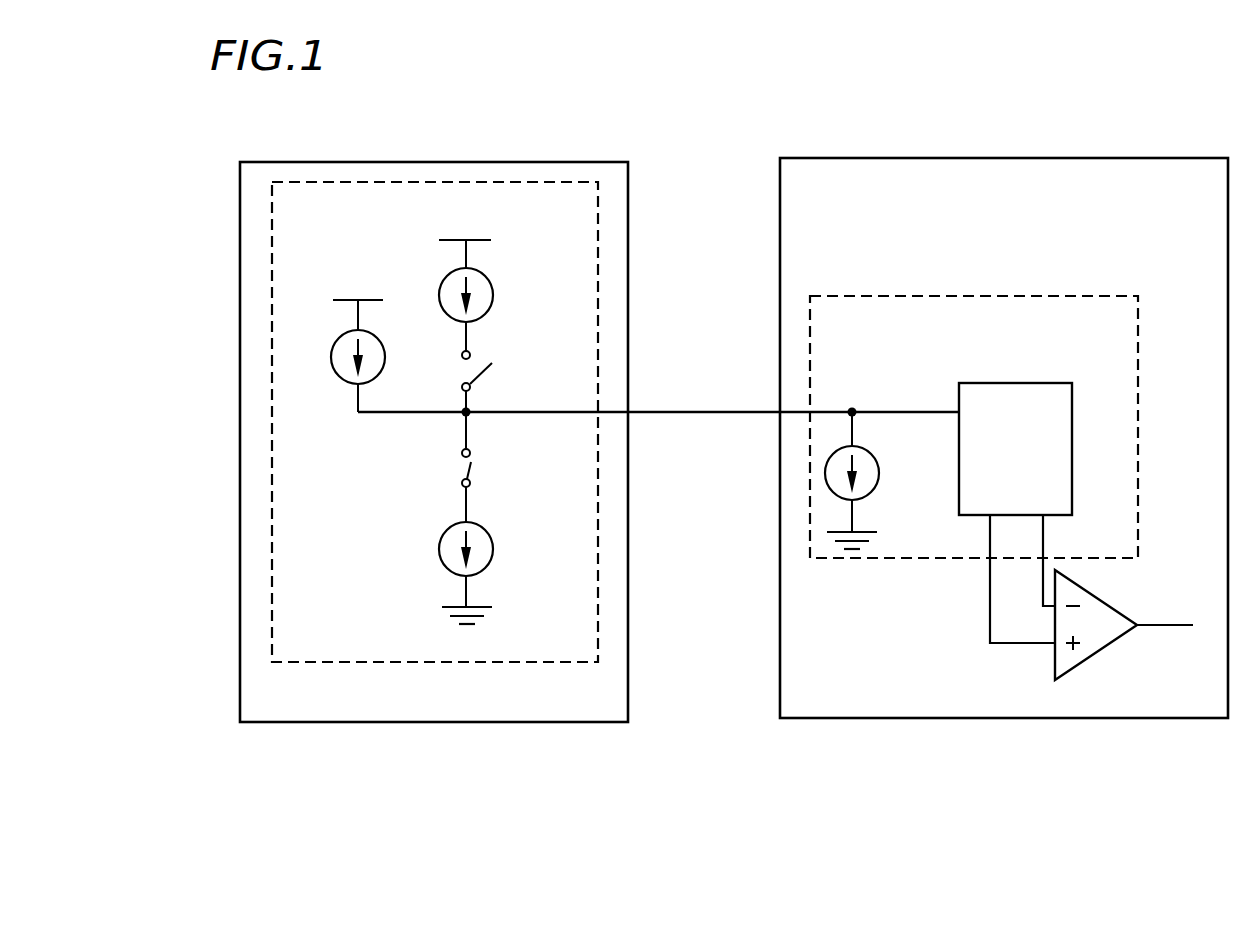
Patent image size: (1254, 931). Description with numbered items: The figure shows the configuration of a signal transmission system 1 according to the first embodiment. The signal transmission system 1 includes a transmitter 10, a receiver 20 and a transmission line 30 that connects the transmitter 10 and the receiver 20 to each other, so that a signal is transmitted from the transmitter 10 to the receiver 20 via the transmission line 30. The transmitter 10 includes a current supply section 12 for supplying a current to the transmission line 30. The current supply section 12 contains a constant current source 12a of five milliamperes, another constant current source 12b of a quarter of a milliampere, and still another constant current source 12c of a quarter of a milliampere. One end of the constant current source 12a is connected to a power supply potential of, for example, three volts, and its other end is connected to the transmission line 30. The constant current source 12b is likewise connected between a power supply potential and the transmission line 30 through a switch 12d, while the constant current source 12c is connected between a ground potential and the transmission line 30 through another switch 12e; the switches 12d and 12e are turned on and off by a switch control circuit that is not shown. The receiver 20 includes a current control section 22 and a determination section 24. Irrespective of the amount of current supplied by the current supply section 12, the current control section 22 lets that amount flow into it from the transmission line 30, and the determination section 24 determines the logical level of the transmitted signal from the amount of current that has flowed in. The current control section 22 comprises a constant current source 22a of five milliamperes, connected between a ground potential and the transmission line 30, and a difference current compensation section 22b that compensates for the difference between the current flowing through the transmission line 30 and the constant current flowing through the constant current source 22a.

The signal transmission system 1 is at (703, 792).
The transmitter 10 is at (468, 162).
The current supply section 12 is at (297, 663).
The constant current source 12a is at (332, 352).
The constant current source 12b is at (486, 277).
The constant current source 12c is at (493, 547).
The switch 12d is at (490, 368).
The switch 12e is at (471, 463).
The receiver 20 is at (1100, 158).
The current control section 22 is at (1100, 296).
The constant current source 22a is at (878, 470).
The difference current compensation section 22b is at (1015, 383).
The determination section 24 is at (1105, 648).
The transmission line 30 is at (698, 412).